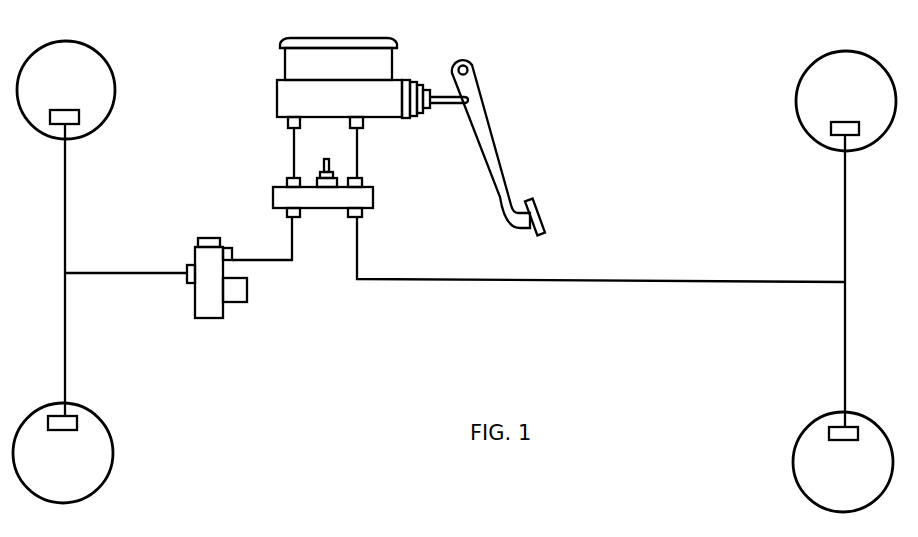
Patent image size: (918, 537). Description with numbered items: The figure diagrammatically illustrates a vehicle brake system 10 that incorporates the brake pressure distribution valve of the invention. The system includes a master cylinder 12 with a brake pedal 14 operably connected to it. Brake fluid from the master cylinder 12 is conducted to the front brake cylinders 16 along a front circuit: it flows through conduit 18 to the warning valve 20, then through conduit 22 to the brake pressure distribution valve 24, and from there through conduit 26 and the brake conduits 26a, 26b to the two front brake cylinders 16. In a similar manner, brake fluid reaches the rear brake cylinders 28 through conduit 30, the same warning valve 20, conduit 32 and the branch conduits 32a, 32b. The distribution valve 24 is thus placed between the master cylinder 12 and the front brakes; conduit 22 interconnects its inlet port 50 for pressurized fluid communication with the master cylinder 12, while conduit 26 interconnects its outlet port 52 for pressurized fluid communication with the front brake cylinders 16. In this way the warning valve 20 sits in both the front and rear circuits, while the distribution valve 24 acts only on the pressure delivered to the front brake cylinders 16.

The vehicle brake system 10 is at (652, 84).
The master cylinder 12 is at (277, 95).
The brake pedal 14 is at (536, 212).
The front brake cylinders 16 is at (64, 110).
The conduit 18 is at (292, 152).
The warning valve 20 is at (373, 198).
The conduit 22 is at (278, 262).
The brake pressure distribution valve 24 is at (206, 319).
The conduit 26 is at (132, 270).
The brake conduit 26a is at (65, 189).
The brake conduit 26b is at (65, 360).
The rear brake cylinders 28 is at (845, 122).
The conduit 30 is at (360, 152).
The conduit 32 is at (642, 280).
The branch conduit 32a is at (845, 200).
The branch conduit 32b is at (845, 370).
The inlet port 50 is at (232, 253).
The outlet port 52 is at (187, 282).